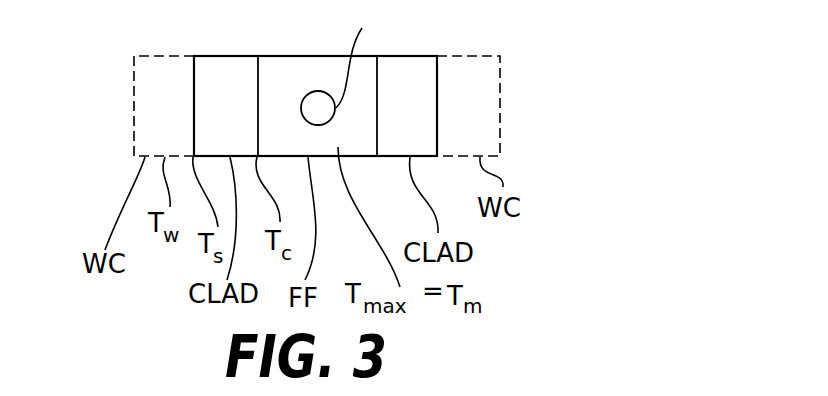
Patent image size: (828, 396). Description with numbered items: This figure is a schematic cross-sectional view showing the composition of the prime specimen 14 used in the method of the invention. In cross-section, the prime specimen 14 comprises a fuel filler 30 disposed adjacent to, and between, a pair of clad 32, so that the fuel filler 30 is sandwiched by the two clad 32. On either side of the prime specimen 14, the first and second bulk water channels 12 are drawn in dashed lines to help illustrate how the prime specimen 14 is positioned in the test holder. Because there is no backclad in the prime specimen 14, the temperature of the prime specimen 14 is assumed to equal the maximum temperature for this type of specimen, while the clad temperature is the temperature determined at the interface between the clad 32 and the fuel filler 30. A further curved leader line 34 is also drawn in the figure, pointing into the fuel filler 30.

The bulk water channel 12 is at (317, 106).
The prime specimen 14 is at (341, 78).
The fuel filler 30 is at (318, 91).
The clad 32 is at (315, 106).
The interface line 34 is at (416, 44).